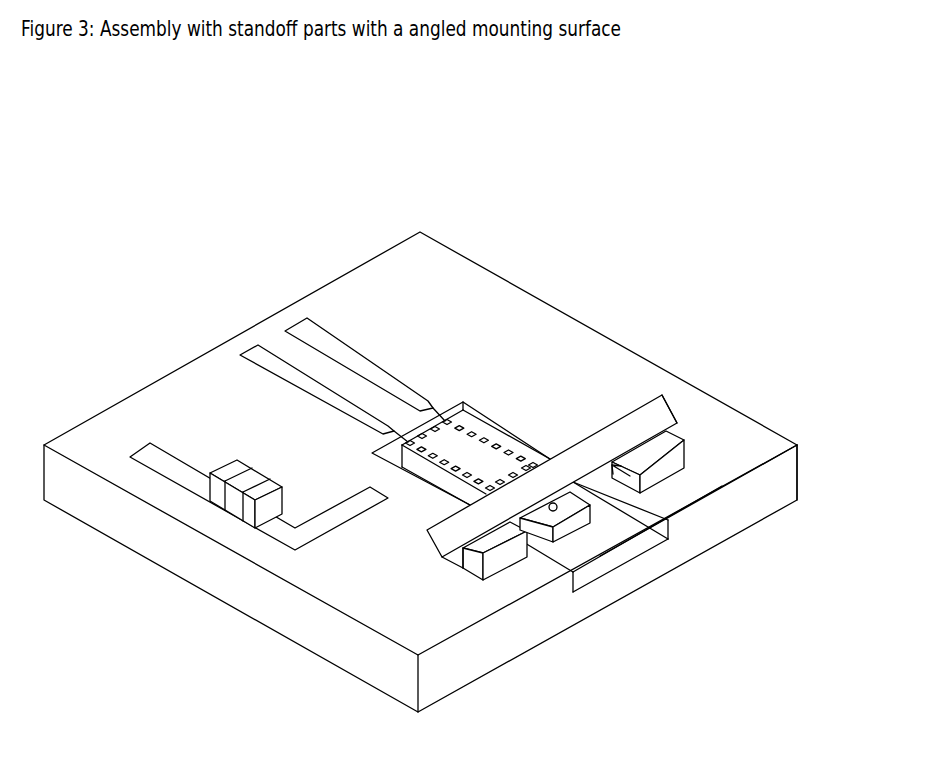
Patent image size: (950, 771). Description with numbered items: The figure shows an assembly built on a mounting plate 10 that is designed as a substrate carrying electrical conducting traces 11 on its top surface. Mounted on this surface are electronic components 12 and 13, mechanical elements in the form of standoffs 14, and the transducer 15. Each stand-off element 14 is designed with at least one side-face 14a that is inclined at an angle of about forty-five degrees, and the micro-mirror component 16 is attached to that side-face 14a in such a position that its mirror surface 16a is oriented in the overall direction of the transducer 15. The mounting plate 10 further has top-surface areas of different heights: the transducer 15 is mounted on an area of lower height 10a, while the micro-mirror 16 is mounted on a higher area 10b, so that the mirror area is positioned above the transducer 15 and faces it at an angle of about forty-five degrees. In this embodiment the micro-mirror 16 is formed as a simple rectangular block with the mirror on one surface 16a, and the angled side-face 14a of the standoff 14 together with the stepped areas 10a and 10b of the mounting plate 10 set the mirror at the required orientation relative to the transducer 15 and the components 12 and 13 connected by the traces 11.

The mounting plate 10 is at (467, 347).
The lower-height area 10a is at (627, 541).
The higher area 10b is at (703, 487).
The electrical conducting traces 11 is at (365, 370).
The electronic component 12 is at (480, 462).
The electronic component 13 is at (232, 473).
The standoff 14 is at (684, 463).
The side-face 14a is at (460, 558).
The transducer 15 is at (572, 522).
The micro-mirror component 16 is at (630, 433).
The mirror surface 16a is at (670, 430).